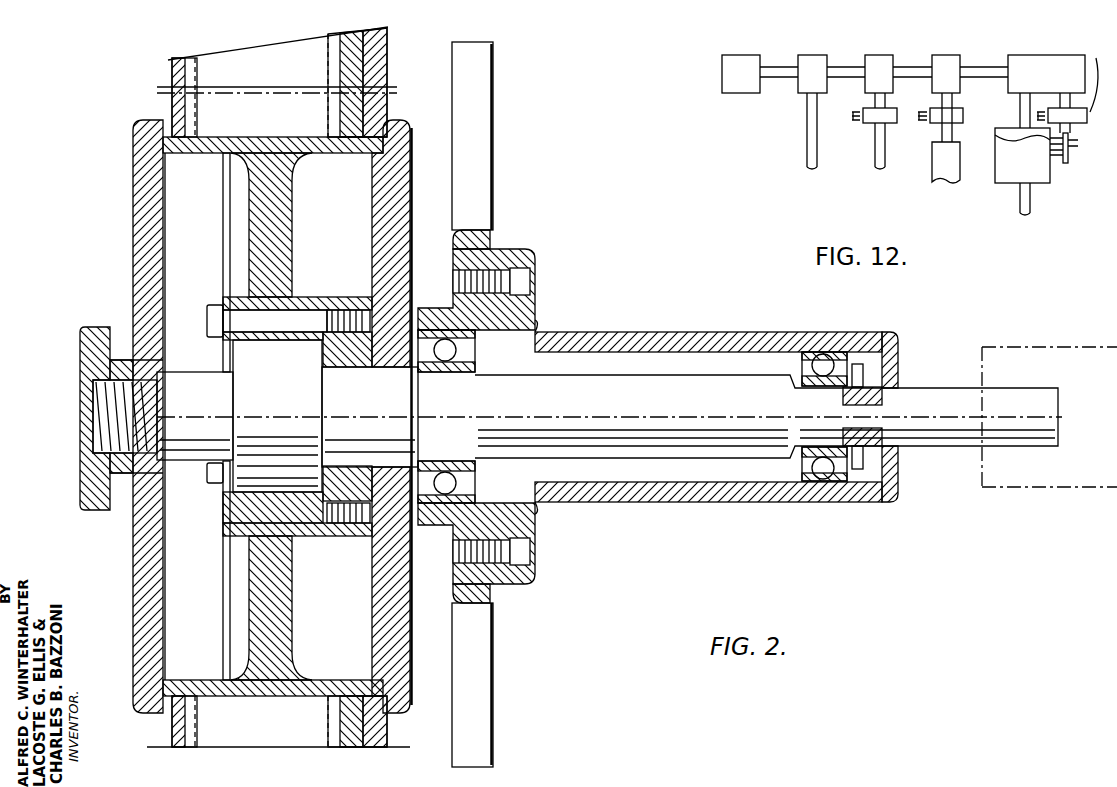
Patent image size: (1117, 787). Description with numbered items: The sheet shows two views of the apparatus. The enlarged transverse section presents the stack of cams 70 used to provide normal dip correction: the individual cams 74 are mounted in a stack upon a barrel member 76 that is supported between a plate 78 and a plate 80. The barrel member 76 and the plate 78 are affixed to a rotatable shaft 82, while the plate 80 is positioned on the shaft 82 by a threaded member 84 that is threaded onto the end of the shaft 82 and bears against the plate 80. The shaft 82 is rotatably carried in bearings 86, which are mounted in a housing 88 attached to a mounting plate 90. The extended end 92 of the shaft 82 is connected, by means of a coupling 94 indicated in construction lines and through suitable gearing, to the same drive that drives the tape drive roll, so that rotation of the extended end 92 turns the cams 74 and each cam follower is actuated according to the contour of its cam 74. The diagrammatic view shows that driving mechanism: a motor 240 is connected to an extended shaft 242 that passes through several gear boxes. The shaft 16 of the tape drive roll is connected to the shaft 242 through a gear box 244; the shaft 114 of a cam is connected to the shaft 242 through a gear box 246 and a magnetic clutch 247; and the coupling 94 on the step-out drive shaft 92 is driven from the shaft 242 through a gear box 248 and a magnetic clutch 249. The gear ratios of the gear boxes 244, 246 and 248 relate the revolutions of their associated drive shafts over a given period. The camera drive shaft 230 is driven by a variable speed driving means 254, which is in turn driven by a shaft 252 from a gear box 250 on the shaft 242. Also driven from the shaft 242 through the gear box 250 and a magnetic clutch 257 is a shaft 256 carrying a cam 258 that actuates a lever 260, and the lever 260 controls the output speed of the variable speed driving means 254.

In FIG. 2, the stack of cams 70 is at (252, 387).
In FIG. 2, the cam 74 is at (198, 402).
In FIG. 2, the barrel member 76 is at (268, 143).
In FIG. 2, the plate 78 is at (380, 206).
In FIG. 2, the plate 80 is at (145, 196).
In FIG. 2, the rotatable shaft 82 is at (303, 400).
In FIG. 2, the threaded member 84 is at (86, 340).
In FIG. 2, the bearings 86 is at (462, 372).
In FIG. 2, the housing 88 is at (590, 335).
In FIG. 2, the mounting plate 90 is at (493, 202).
In FIG. 2, the extended end of shaft 92 is at (960, 392).
In FIG. 2, the coupling 94 is at (1058, 347).
In FIG. 12, the coupling 94 is at (936, 165).
In FIG. 12, the motor 240 is at (736, 55).
In FIG. 12, the extended shaft 242 is at (780, 66).
In FIG. 12, the gear box 244 is at (814, 55).
In FIG. 12, the gear box 246 is at (868, 60).
In FIG. 12, the gear box 248 is at (936, 60).
In FIG. 12, the gear box 250 is at (1045, 55).
In FIG. 12, the shaft of tape drive roll 16 is at (806, 162).
In FIG. 12, the shaft of cam 114 is at (874, 162).
In FIG. 12, the magnetic clutch 247 is at (865, 108).
In FIG. 12, the magnetic clutch 249 is at (932, 109).
In FIG. 12, the shaft 252 is at (1020, 118).
In FIG. 12, the variable speed driving means 254 is at (997, 175).
In FIG. 12, the shaft 256 is at (1070, 150).
In FIG. 12, the magnetic clutch 257 is at (1091, 73).
In FIG. 12, the cam 258 is at (997, 140).
In FIG. 12, the lever 260 is at (1072, 148).
In FIG. 12, the camera drive shaft 230 is at (1032, 197).